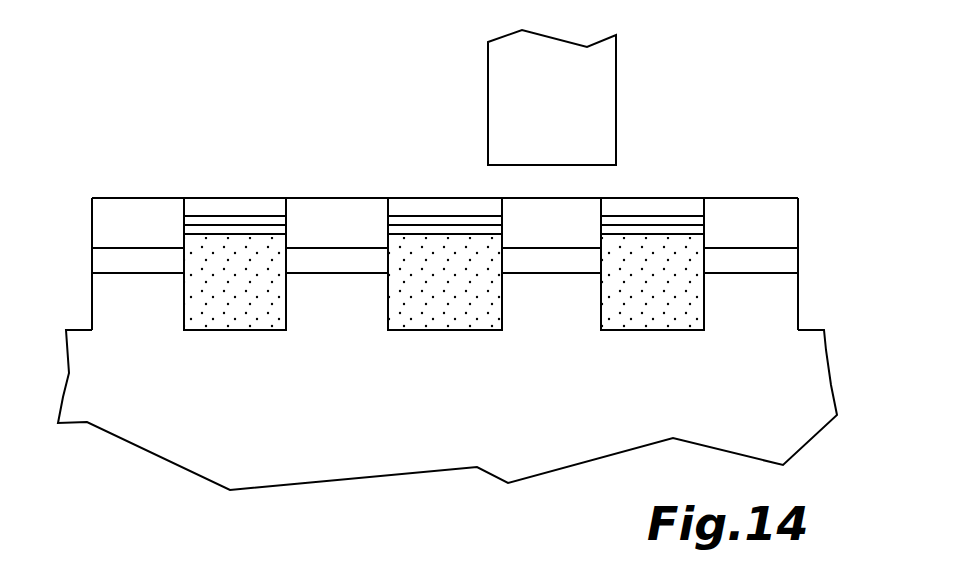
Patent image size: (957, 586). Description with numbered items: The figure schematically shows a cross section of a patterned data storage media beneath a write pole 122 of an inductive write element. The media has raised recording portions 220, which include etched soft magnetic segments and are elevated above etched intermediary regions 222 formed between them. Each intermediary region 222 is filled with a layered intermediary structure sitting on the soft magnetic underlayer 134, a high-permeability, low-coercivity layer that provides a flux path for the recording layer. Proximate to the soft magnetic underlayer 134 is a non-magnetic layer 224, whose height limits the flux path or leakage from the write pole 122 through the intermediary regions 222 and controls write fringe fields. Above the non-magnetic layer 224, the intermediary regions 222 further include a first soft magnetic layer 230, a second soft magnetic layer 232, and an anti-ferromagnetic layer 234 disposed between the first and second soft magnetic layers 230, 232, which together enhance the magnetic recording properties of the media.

The write pole 122 is at (595, 57).
The soft magnetic underlayer 134 is at (817, 386).
The raised recording portions 220 is at (142, 194).
The intermediary regions 222 is at (268, 326).
The non-magnetic layer 224 is at (444, 283).
The first soft magnetic layer 230 is at (184, 230).
The second soft magnetic layer 232 is at (257, 207).
The anti-ferromagnetic layer 234 is at (278, 223).